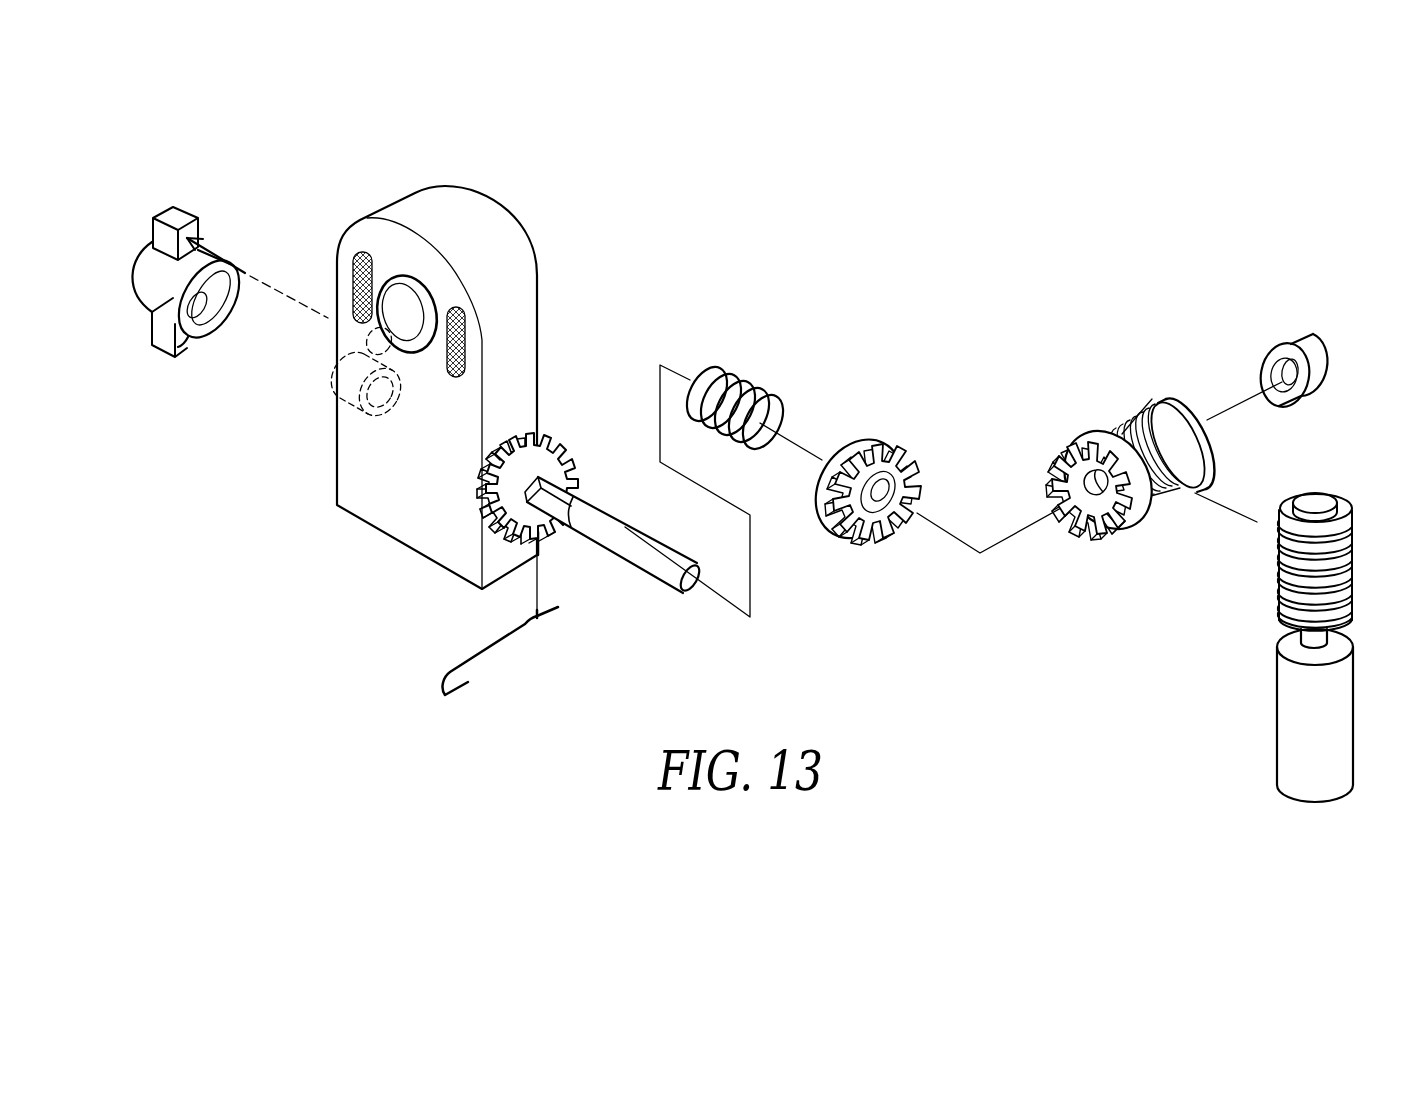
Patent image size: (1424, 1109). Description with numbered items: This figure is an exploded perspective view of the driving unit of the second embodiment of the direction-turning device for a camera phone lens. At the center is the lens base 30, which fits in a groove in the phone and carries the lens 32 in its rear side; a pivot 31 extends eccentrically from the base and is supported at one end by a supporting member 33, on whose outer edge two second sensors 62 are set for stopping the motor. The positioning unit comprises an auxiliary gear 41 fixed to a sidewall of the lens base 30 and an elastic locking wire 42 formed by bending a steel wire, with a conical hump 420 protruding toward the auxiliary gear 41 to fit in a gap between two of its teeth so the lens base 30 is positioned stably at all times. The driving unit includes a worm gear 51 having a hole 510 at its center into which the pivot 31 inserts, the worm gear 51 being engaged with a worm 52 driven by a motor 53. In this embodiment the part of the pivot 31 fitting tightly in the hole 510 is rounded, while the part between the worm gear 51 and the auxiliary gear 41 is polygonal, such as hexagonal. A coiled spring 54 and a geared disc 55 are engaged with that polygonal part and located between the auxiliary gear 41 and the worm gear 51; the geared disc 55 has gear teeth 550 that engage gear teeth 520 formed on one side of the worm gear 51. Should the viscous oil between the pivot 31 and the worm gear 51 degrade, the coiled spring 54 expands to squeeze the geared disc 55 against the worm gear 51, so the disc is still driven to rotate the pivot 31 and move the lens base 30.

The lens base 30 is at (505, 310).
The pivot 31 is at (350, 405).
The lens 32 is at (395, 307).
The supporting member 33 is at (147, 282).
The auxiliary gear 41 is at (560, 458).
The elastic locking wire 42 is at (495, 648).
The conical hump 420 is at (540, 625).
The worm gear 51 is at (1118, 511).
The hole 510 is at (1097, 487).
The worm 52 is at (1322, 557).
The motor 53 is at (1317, 707).
The coiled spring 54 is at (722, 386).
The geared disc 55 is at (908, 450).
The gear teeth 550 is at (920, 458).
The gear teeth 520 is at (1107, 527).
The second sensor 62 is at (160, 234).